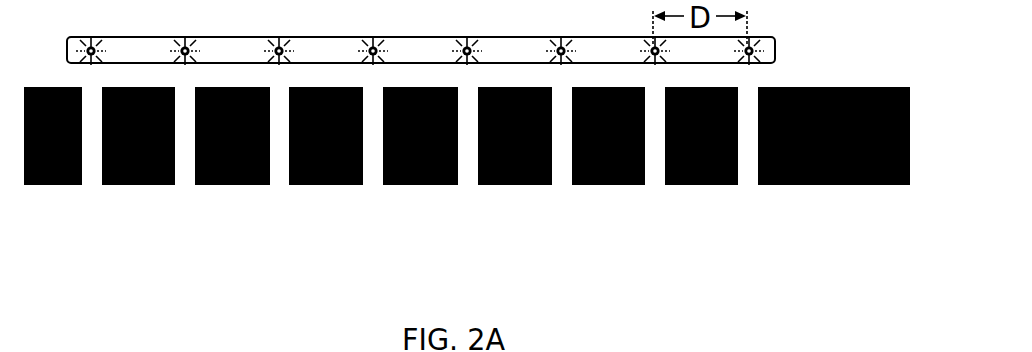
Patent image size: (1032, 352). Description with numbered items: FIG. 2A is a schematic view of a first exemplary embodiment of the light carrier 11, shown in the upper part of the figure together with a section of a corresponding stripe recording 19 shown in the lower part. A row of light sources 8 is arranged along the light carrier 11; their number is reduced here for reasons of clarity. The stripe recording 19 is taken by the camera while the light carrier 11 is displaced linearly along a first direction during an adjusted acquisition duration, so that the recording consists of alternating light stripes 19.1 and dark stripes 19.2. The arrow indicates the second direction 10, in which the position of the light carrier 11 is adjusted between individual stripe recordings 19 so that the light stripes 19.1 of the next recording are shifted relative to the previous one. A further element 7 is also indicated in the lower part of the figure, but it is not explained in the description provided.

The cultivation trays 7 is at (467, 193).
The light sources 8 is at (91, 64).
The second direction 10 is at (797, 48).
The light carrier 11 is at (422, 54).
The stripe recording 19 is at (610, 190).
The light stripes 19.1 is at (468, 186).
The dark stripes 19.2 is at (513, 187).